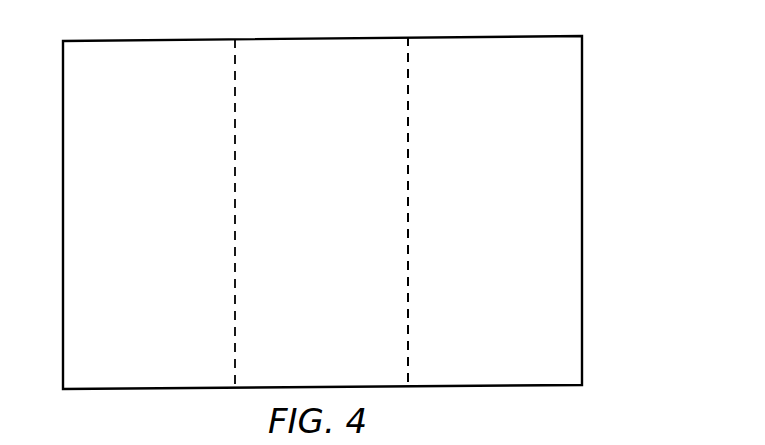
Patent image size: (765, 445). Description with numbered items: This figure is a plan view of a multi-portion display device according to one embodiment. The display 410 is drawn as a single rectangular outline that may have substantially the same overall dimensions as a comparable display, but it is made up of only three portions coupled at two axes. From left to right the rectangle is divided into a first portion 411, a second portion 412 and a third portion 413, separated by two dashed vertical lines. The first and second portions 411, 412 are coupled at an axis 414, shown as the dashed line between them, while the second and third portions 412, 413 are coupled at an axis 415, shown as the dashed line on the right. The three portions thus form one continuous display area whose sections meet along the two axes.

The display 410 is at (583, 109).
The first portion 411 is at (170, 227).
The second portion 412 is at (342, 227).
The third portion 413 is at (516, 227).
The axis 414 is at (235, 122).
The axis 415 is at (409, 303).